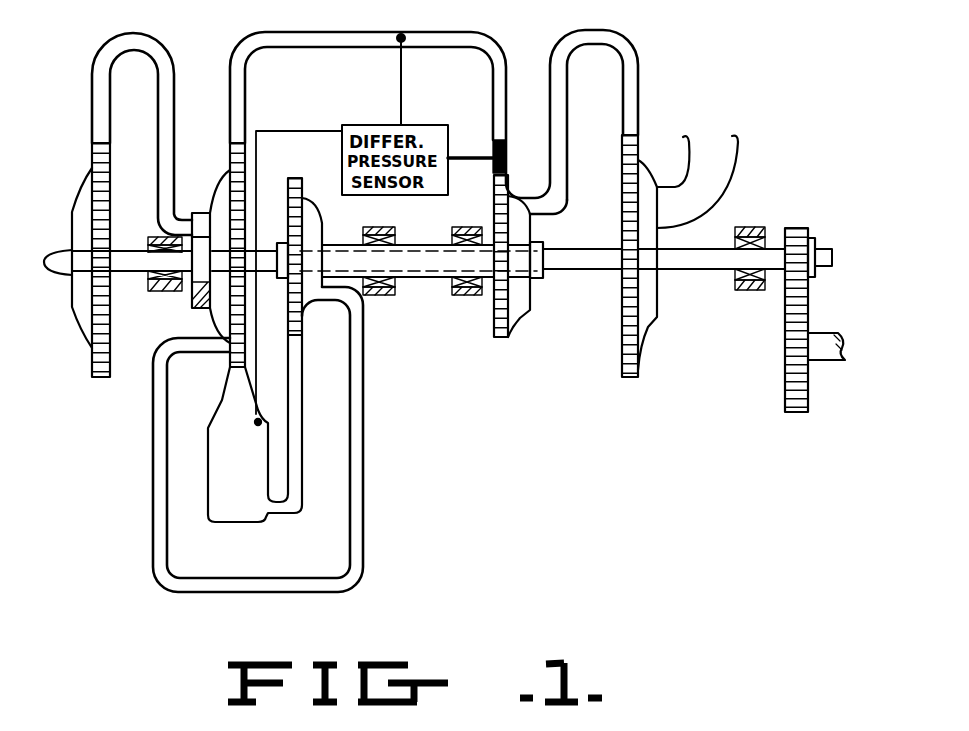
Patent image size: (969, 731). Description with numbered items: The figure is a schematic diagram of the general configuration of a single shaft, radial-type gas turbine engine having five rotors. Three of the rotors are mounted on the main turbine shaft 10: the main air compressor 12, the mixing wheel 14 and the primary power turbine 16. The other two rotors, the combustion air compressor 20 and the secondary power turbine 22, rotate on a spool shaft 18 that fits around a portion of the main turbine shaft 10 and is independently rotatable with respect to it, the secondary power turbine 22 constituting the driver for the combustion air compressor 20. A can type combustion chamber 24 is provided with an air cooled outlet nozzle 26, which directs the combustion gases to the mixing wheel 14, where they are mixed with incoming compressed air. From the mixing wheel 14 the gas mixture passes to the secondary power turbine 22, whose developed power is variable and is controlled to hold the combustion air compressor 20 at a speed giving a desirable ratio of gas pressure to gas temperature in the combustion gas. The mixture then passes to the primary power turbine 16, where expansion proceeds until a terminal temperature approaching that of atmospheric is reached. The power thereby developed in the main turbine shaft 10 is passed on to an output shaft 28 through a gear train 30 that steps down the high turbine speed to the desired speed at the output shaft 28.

The main turbine shaft 10 is at (592, 268).
The main air compressor 12 is at (88, 313).
The mixing wheel 14 is at (223, 306).
The primary power turbine 16 is at (650, 327).
The spool shaft 18 is at (433, 277).
The combustion air compressor 20 is at (289, 187).
The secondary power turbine 22 is at (515, 305).
The can type combustion chamber 24 is at (222, 473).
The air cooled outlet nozzle 26 is at (235, 403).
The output shaft 28 is at (830, 362).
The gear train 30 is at (790, 330).